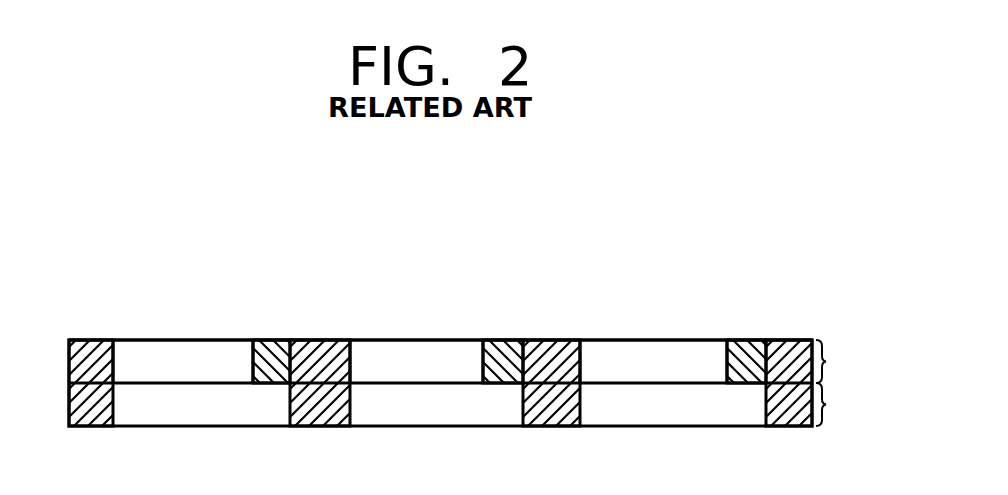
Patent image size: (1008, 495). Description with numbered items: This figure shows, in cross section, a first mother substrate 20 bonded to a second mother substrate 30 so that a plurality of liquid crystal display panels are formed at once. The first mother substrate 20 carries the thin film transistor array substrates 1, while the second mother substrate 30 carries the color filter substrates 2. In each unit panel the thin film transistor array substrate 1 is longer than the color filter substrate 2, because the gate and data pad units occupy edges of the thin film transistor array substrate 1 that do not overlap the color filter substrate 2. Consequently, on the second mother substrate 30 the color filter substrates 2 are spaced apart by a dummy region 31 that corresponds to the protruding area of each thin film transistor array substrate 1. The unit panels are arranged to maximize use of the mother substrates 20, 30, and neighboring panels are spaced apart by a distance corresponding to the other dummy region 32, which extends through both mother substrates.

The thin film transistor array substrate 1 is at (195, 420).
The color filter substrate 2 is at (388, 353).
The first mother substrate 20 is at (465, 404).
The second mother substrate 30 is at (465, 361).
The dummy region 31 is at (275, 355).
The other dummy region 32 is at (88, 352).